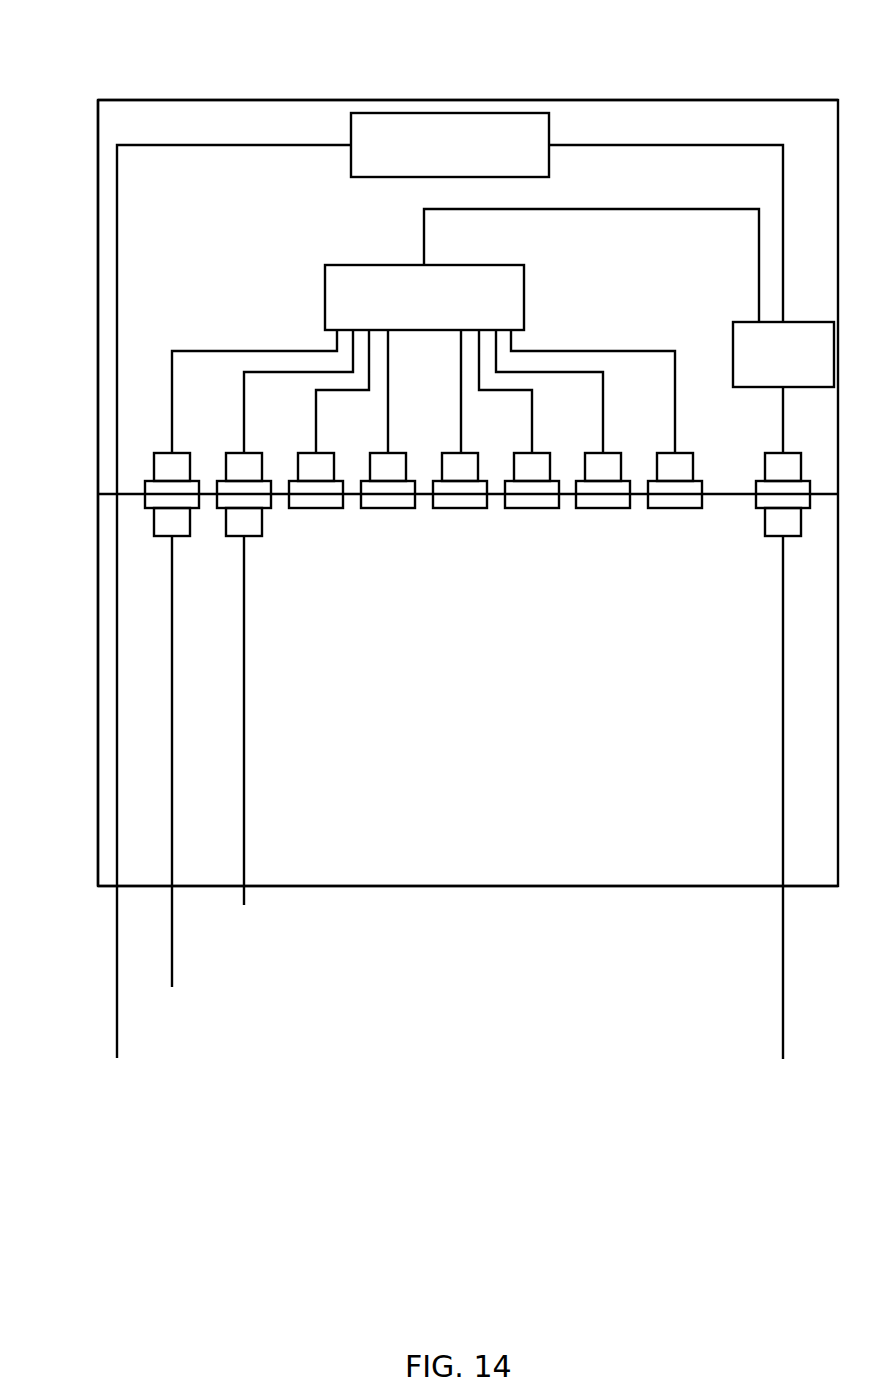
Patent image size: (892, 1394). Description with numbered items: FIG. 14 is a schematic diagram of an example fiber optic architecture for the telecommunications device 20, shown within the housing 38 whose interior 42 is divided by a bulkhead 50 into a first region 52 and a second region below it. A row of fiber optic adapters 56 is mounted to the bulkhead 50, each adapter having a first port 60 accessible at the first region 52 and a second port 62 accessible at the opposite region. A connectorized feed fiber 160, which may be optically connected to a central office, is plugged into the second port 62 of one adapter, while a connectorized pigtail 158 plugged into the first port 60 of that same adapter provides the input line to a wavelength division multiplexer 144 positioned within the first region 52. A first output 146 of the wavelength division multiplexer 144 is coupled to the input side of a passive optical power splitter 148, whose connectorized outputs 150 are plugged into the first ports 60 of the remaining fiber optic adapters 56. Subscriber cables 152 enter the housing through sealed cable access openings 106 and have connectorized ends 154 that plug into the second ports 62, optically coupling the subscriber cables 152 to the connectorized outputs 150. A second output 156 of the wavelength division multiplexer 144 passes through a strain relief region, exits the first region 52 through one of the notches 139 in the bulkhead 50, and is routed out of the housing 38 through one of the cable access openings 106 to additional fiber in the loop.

The telecommunications device 20 is at (684, 92).
The housing 38 is at (97, 218).
The first region 52 is at (675, 129).
The interior 42 is at (508, 855).
The second output 156 is at (724, 145).
The first output 146 is at (632, 209).
The passive optical power splitter 148 is at (353, 265).
The connectorized outputs 150 is at (592, 352).
The wavelength division multiplexer 144 is at (748, 322).
The connectorized pigtail 158 is at (782, 425).
The connectorized feed fiber 160 is at (783, 700).
The notches 139 is at (116, 492).
The first ports 60 is at (155, 488).
The fiber optic adapters 56 is at (455, 505).
The second ports 62 is at (152, 502).
The connectorized ends 154 is at (263, 521).
The bulkhead 50 is at (637, 497).
The subscriber cables 152 is at (245, 762).
The cable access openings 106 is at (116, 887).